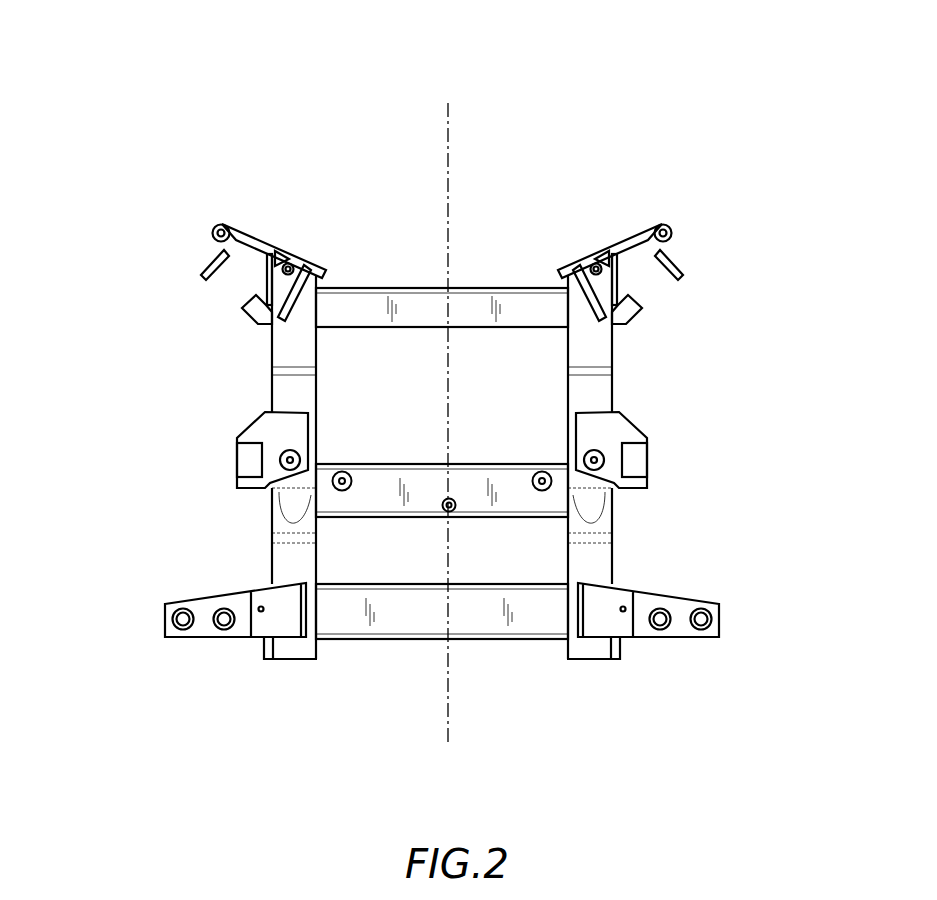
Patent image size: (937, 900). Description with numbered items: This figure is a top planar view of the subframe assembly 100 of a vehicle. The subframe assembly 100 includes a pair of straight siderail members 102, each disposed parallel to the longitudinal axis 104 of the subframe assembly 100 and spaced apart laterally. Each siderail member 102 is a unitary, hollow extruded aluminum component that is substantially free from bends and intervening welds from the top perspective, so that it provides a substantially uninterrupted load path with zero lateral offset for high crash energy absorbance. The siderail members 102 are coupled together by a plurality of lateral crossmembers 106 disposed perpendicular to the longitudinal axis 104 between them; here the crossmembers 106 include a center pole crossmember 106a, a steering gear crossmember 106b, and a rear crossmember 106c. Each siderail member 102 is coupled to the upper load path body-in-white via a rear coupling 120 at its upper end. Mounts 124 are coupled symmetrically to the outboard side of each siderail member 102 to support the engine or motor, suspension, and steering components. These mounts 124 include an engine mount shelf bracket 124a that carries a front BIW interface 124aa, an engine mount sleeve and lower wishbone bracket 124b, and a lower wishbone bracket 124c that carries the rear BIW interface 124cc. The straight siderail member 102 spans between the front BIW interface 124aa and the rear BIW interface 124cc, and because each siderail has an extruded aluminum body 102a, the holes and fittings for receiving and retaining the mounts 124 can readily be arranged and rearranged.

The subframe assembly 100 is at (700, 194).
The siderail member 102 is at (424, 454).
The extruded aluminum body 102a is at (270, 372).
The longitudinal axis 104 is at (450, 160).
The lateral crossmember 106 is at (530, 453).
The center pole crossmember 106a is at (508, 641).
The steering gear crossmember 106b is at (540, 519).
The rear crossmember 106c is at (495, 330).
The rear ULP BIW coupling 120 is at (196, 351).
The mounts 124 is at (191, 404).
The engine mount shelf bracket 124a is at (193, 586).
The front BIW interface 124aa is at (193, 636).
The engine mount sleeve and lower wishbone bracket 124b is at (265, 422).
The lower wishbone bracket 124c is at (193, 166).
The rear BIW interface 124cc is at (209, 205).